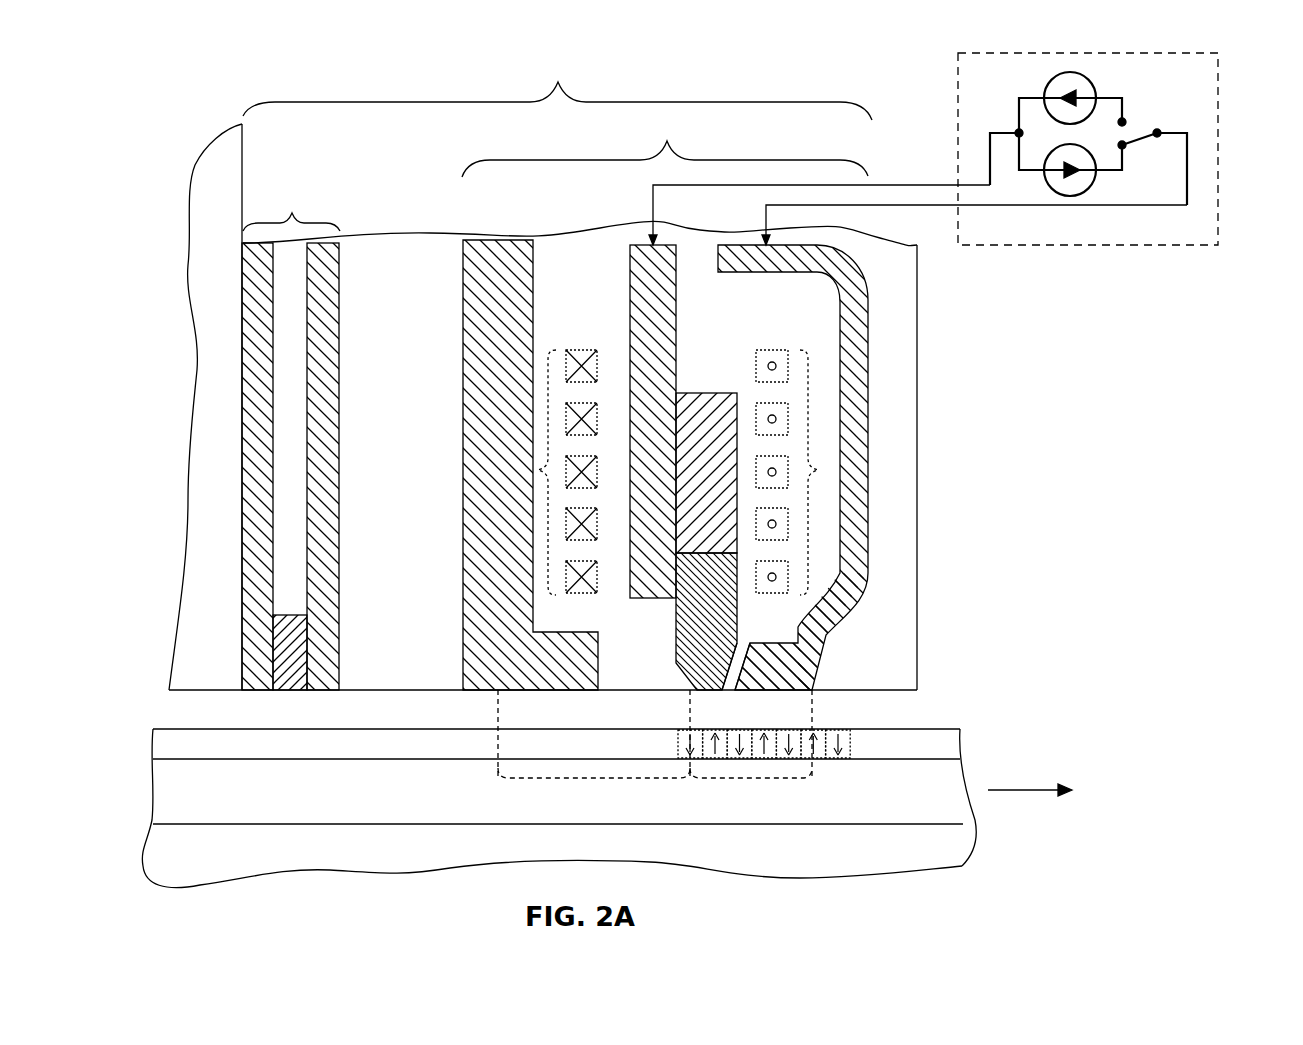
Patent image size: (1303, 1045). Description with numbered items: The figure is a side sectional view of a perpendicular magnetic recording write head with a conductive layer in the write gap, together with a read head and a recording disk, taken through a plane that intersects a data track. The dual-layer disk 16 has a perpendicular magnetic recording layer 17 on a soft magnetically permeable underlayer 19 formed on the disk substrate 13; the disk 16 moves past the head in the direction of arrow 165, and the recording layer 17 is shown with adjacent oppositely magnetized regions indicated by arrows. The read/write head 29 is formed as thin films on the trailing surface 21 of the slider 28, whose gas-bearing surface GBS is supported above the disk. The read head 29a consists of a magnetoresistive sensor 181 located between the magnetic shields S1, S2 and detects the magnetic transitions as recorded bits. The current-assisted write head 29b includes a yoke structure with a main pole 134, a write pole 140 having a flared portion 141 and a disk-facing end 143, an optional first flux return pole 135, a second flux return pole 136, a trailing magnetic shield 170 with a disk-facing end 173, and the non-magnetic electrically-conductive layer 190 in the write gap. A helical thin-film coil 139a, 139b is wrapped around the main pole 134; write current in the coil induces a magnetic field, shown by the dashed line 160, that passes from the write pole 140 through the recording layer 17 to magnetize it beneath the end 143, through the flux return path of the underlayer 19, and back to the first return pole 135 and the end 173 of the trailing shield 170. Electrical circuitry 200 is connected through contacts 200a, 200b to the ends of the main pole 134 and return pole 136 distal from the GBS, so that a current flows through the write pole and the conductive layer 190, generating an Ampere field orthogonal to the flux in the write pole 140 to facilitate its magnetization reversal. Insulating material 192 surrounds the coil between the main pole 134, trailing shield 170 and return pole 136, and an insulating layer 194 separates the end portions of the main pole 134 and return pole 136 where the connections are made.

The disk 16 is at (122, 849).
The disk substrate 13 is at (965, 846).
The recording layer (RL) 17 is at (960, 745).
The soft underlayer (SUL) 19 is at (960, 781).
The arrow indicating disk motion direction 165 is at (1036, 790).
The trailing surface 21 is at (247, 160).
The slider 28 is at (190, 188).
The read/write head 29 is at (557, 86).
The read head 29a is at (291, 209).
The write head 29b is at (665, 145).
The first magnetic shield S1 is at (254, 530).
The second magnetic shield S2 is at (326, 530).
The magnetoresistive read sensor 181 is at (292, 686).
The gas-bearing surface GBS is at (204, 690).
The first flux return pole 135 is at (475, 315).
The main pole 134 is at (642, 316).
The first coil section 139a is at (540, 470).
The second coil section 139b is at (818, 470).
The write pole 140 is at (690, 392).
The flared portion 141 is at (680, 608).
The disk-facing end of write pole 143 is at (700, 692).
The second flux return pole 136 is at (857, 510).
The trailing magnetic shield 170 is at (783, 665).
The disk-facing end of trailing shield 173 is at (742, 690).
The electrically-conductive layer 190 is at (748, 642).
The insulating material portion 192 is at (802, 324).
The electrically insulating material layer 194 is at (698, 258).
The magnetic field (dashed line) 160 is at (815, 720).
The electrical circuitry 200 is at (1220, 142).
The first electrical contact 200a is at (650, 240).
The second electrical contact 200b is at (763, 240).